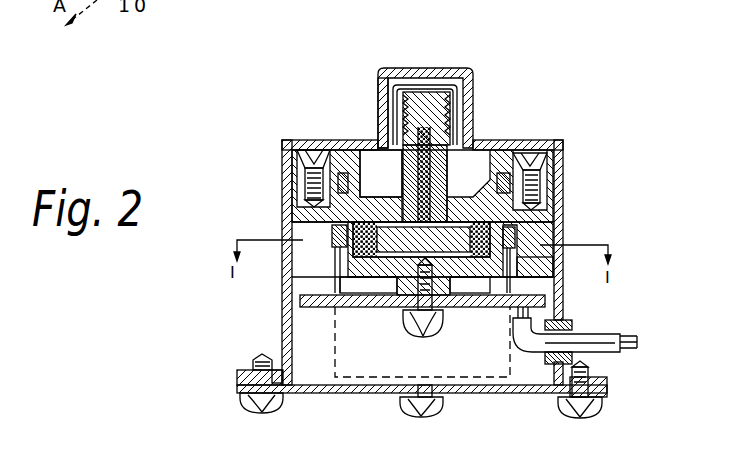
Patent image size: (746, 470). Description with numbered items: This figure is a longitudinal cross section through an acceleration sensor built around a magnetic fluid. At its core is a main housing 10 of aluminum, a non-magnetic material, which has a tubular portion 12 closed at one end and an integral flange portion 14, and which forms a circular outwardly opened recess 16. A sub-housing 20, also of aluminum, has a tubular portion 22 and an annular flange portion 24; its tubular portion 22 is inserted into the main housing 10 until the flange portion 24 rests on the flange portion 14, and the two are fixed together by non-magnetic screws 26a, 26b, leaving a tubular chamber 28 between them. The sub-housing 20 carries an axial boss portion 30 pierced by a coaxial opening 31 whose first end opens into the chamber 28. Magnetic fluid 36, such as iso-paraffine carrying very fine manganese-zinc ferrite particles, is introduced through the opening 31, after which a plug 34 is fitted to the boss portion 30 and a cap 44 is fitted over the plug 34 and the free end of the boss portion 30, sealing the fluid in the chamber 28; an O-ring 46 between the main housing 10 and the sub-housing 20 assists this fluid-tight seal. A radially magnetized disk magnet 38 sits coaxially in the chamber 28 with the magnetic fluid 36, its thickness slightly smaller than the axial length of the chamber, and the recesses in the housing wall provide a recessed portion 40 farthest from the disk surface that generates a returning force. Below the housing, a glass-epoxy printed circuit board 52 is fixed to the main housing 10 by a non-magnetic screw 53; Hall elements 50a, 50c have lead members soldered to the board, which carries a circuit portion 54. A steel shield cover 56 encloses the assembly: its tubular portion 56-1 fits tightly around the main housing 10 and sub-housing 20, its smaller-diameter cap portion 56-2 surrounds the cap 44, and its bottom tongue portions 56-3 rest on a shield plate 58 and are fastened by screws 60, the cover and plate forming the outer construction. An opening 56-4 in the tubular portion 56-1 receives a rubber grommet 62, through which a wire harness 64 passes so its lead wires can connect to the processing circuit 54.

The main housing 10 is at (218, 165).
The tubular portion 12 is at (297, 221).
The flange portion 14 is at (297, 190).
The circular outwardly opened recess 16 is at (300, 286).
The sub-housing 20 is at (638, 207).
The tubular portion 22 is at (560, 202).
The annular flange portion 24 is at (547, 147).
The screw 26a is at (550, 160).
The screw 26b is at (308, 158).
The tubular chamber 28 is at (565, 244).
The axial boss portion 30 is at (440, 177).
The opening 31 is at (452, 108).
The cap (plug) 34 is at (430, 75).
The magnetic fluid 36 is at (560, 230).
The disk magnet 38 is at (384, 222).
The recessed portion 40 is at (417, 417).
The cap 44 is at (389, 70).
The O-ring 46 is at (517, 147).
The Hall element 50a is at (513, 250).
The Hall element 50c is at (332, 245).
The printed circuit board 52 is at (315, 302).
The screw 53 is at (402, 330).
The circuit portion 54 is at (335, 378).
The shield cover 56 is at (190, 42).
The tubular portion 56-1 is at (279, 157).
The cap portion 56-2 is at (378, 88).
The bottom tongue portion 56-3 is at (243, 370).
The opening 56-4 is at (556, 328).
The shield plate 58 is at (482, 395).
The screw 60 is at (250, 417).
The grommet 62 is at (610, 348).
The wire harness 64 is at (590, 350).